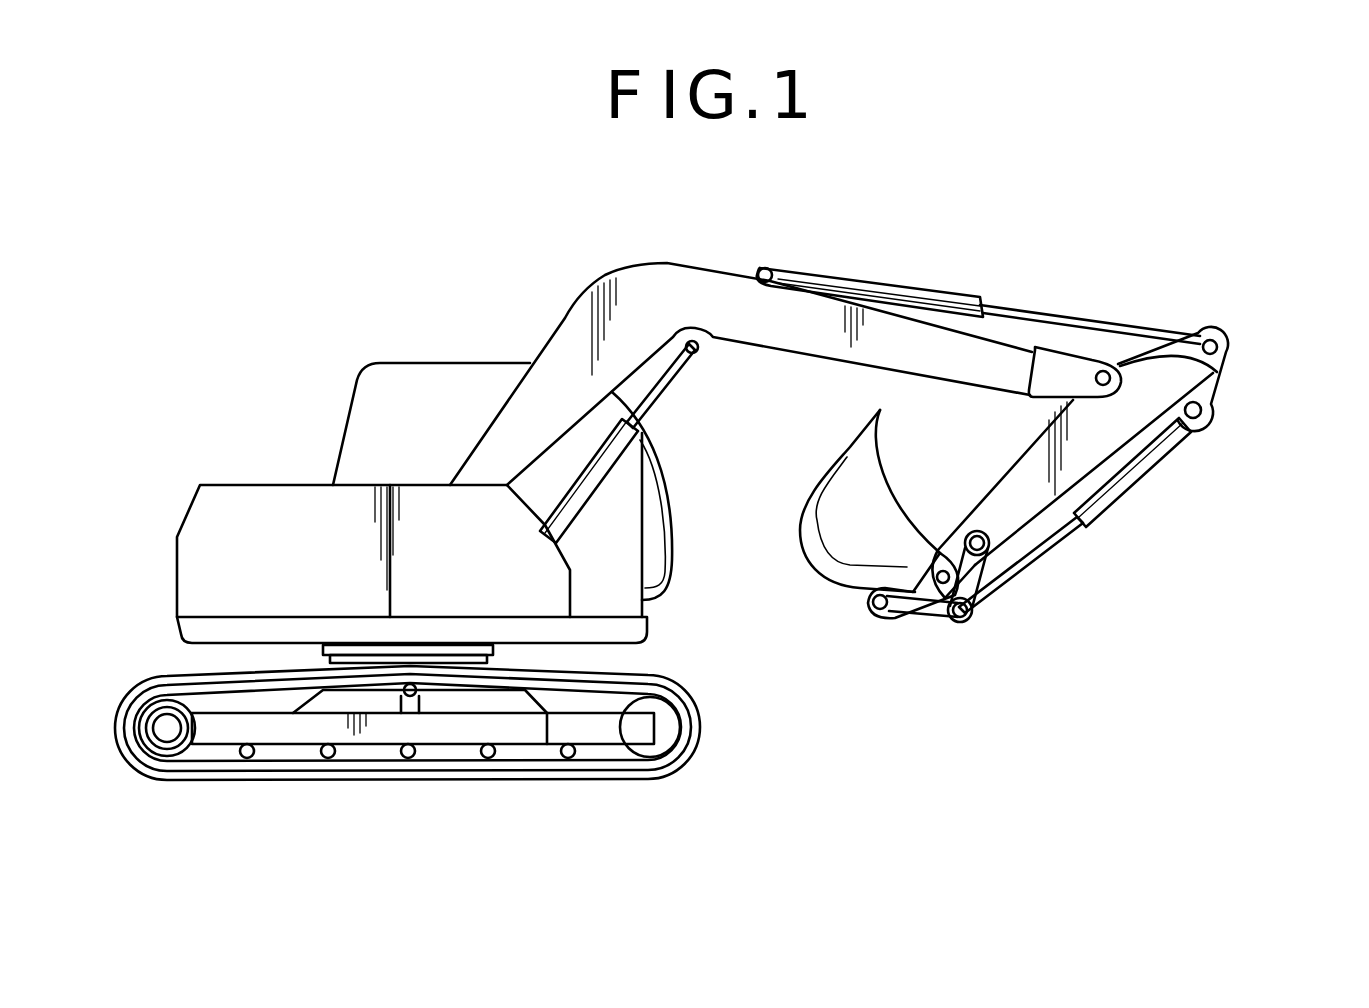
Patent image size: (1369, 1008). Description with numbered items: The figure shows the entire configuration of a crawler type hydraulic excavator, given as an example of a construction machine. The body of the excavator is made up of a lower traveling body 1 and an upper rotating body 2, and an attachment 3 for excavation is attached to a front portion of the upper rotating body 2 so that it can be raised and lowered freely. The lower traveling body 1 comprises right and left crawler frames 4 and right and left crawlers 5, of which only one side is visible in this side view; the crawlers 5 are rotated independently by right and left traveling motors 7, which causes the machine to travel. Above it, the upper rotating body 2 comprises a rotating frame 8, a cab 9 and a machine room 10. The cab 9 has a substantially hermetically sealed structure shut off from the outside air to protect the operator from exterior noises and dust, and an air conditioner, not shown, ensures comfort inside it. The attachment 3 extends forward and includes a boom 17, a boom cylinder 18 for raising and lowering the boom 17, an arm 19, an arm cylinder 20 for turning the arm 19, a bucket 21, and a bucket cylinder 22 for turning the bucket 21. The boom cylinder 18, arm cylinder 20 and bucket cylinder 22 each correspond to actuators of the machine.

The lower traveling body 1 is at (447, 785).
The upper rotating body 2 is at (457, 479).
The attachment 3 is at (893, 404).
The crawler frame 4 is at (283, 730).
The crawler 5 is at (701, 725).
The traveling motor 7 is at (167, 745).
The rotating frame 8 is at (648, 637).
The cab 9 is at (480, 407).
The machine room 10 is at (293, 485).
The boom 17 is at (667, 263).
The boom cylinder 18 is at (657, 407).
The arm 19 is at (1005, 490).
The arm cylinder 20 is at (1055, 313).
The bucket 21 is at (827, 473).
The bucket cylinder 22 is at (1110, 507).